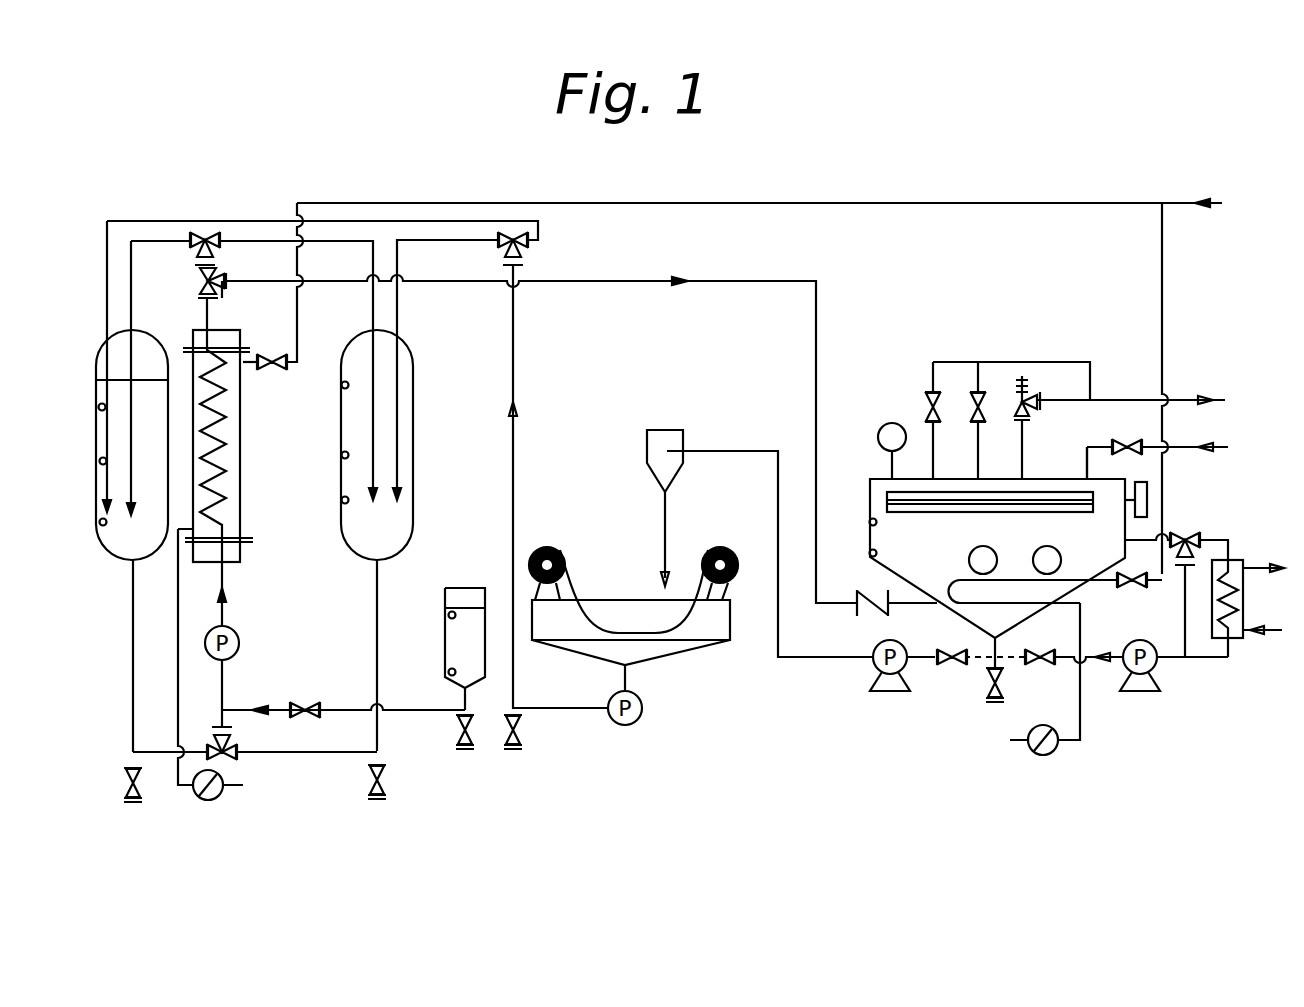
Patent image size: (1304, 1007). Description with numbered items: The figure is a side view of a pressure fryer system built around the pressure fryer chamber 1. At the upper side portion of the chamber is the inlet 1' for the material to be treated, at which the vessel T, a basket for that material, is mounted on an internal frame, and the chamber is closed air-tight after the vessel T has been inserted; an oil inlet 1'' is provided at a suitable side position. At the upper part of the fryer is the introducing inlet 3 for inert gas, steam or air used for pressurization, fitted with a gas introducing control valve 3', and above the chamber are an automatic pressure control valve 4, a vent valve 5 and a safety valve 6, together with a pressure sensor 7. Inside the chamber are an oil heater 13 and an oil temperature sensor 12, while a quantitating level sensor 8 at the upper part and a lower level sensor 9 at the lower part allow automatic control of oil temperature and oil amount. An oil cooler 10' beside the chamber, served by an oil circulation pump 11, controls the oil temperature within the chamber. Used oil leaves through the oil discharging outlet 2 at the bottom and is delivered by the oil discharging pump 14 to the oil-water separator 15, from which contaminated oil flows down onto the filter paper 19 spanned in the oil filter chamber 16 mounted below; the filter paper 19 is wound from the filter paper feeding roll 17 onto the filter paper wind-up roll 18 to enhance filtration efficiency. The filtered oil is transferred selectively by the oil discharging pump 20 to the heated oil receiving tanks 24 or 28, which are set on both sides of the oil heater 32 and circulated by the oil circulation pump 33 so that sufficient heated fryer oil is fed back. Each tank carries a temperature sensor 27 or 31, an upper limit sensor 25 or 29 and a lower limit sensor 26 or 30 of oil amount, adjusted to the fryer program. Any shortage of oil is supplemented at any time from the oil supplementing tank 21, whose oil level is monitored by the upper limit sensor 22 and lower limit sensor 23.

The pressure fryer chamber 1 is at (997, 534).
The inlet 1' is at (1169, 499).
The oil inlet 1'' is at (898, 619).
The oil discharging outlet 2 is at (990, 666).
The introducing inlet 3 is at (1150, 466).
The gas introducing control valve 3' is at (1127, 405).
The automatic pressure control valve 4 is at (972, 395).
The vent valve 5 is at (928, 395).
The safety valve 6 is at (1010, 395).
The pressure sensor 7 is at (890, 423).
The quantitating level sensor 8 is at (870, 522).
The lower level sensor 9 is at (870, 553).
The oil cooler 10' is at (1258, 599).
The oil circulation pump 11 is at (1160, 666).
The oil temperature sensor 12 is at (969, 560).
The oil heater 13 is at (1060, 560).
The oil discharging pump 14 is at (872, 666).
The oil-water separator 15 is at (662, 432).
The oil filter chamber 16 is at (605, 600).
The filter paper feeding roll 17 is at (722, 547).
The filter paper wind-up roll 18 is at (547, 547).
The filter paper 19 is at (680, 612).
The oil discharging pump 20 is at (640, 716).
The oil supplementing tank 21 is at (470, 588).
The oil supplementing tank upper limit sensor 22 is at (449, 614).
The oil supplementing tank lower limit sensor 23 is at (449, 671).
The heated oil receiving tank 24 is at (96, 365).
The upper limit sensor 25 is at (100, 406).
The lower limit sensor 26 is at (100, 524).
The temperature sensor 27 is at (100, 461).
The heated oil receiving tank 28 is at (415, 356).
The upper limit sensor 29 is at (343, 386).
The lower limit sensor 30 is at (343, 501).
The temperature sensor 31 is at (343, 456).
The oil heater 32 is at (240, 424).
The oil circulation pump 33 is at (240, 643).
The vessel T is at (887, 490).